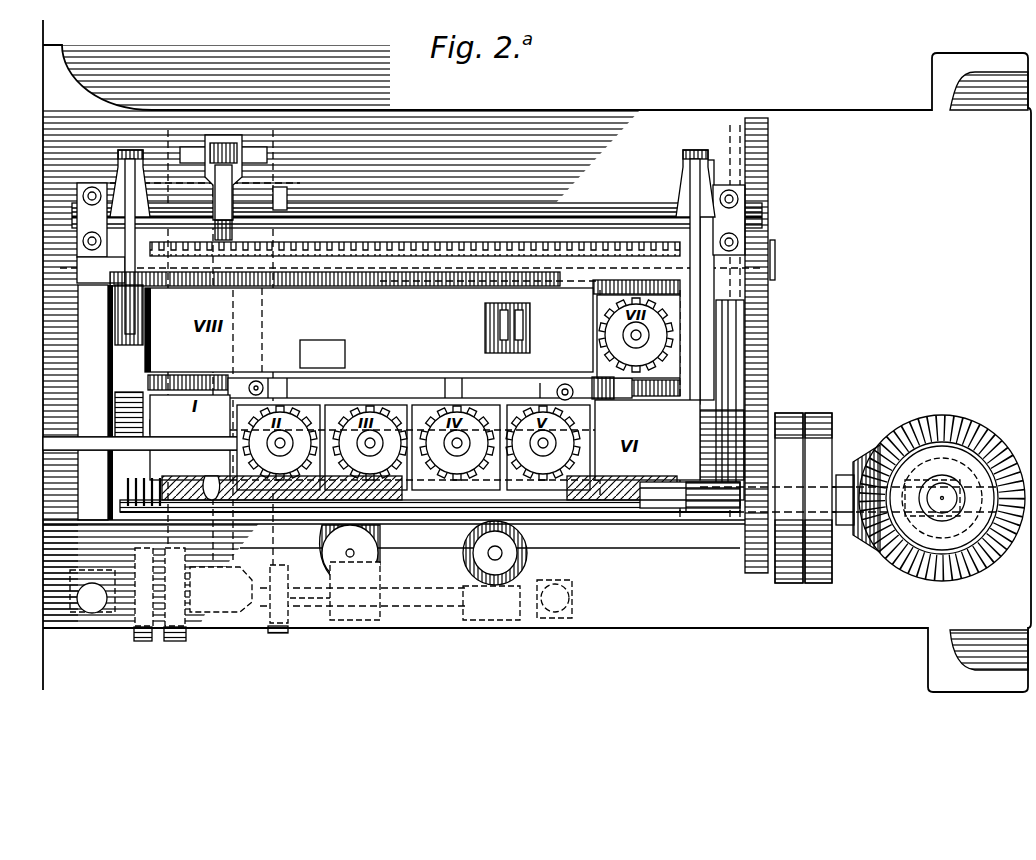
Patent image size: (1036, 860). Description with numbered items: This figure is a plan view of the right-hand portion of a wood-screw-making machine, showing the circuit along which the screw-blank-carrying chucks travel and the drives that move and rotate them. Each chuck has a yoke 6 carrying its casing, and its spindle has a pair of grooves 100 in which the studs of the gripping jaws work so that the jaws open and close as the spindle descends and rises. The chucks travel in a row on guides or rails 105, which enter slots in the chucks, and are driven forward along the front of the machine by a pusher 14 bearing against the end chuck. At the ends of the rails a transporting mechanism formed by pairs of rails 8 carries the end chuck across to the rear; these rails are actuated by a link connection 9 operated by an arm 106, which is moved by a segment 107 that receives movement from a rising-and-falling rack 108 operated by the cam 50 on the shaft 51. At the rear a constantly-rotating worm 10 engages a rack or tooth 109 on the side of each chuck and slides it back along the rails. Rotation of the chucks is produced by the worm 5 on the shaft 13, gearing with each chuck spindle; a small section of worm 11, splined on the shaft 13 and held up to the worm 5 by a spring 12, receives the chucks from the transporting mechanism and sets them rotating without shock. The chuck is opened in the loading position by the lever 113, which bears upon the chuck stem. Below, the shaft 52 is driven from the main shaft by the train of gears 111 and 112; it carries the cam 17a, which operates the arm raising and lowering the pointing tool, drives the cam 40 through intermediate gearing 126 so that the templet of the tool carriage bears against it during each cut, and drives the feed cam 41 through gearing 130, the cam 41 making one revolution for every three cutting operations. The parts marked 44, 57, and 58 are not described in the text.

The worm 5 is at (375, 490).
The yoke 6 is at (640, 520).
The pairs of rails 8 is at (173, 292).
The link connection 9 is at (698, 243).
The constantly-rotating worm 10 is at (425, 246).
The small section of worm 11 is at (214, 478).
The spring 12 is at (165, 478).
The shaft 13 is at (697, 520).
The pusher 14 is at (152, 425).
The cam 17a is at (280, 633).
The cam 40 is at (530, 552).
The cam 41 is at (385, 552).
The lever 44 is at (575, 380).
The cam 50 is at (247, 150).
The shaft 51 is at (246, 331).
The shaft 52 is at (430, 606).
The stop 57 is at (282, 188).
The rod 58 is at (268, 290).
The grooves 100 is at (556, 392).
The guides or rails 105 is at (594, 408).
The arm 106 is at (140, 190).
The segment 107 is at (226, 193).
The rising-and-falling rack 108 is at (230, 140).
The rack or tooth 109 is at (380, 395).
The gear 111 is at (144, 641).
The gear 112 is at (178, 641).
The lever 113 is at (110, 443).
The intermediate gearing 126 is at (494, 622).
The gearing 130 is at (365, 620).